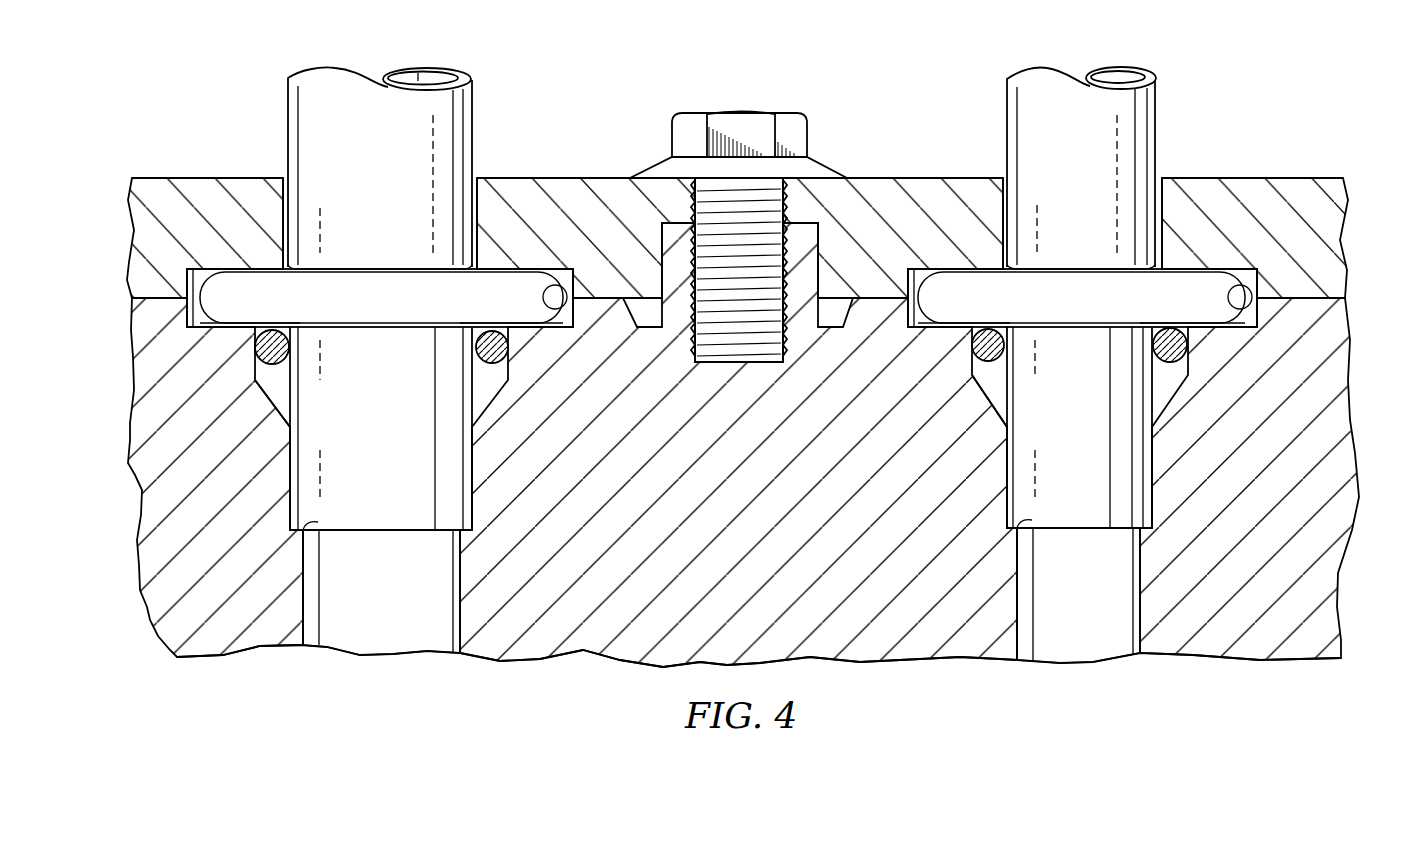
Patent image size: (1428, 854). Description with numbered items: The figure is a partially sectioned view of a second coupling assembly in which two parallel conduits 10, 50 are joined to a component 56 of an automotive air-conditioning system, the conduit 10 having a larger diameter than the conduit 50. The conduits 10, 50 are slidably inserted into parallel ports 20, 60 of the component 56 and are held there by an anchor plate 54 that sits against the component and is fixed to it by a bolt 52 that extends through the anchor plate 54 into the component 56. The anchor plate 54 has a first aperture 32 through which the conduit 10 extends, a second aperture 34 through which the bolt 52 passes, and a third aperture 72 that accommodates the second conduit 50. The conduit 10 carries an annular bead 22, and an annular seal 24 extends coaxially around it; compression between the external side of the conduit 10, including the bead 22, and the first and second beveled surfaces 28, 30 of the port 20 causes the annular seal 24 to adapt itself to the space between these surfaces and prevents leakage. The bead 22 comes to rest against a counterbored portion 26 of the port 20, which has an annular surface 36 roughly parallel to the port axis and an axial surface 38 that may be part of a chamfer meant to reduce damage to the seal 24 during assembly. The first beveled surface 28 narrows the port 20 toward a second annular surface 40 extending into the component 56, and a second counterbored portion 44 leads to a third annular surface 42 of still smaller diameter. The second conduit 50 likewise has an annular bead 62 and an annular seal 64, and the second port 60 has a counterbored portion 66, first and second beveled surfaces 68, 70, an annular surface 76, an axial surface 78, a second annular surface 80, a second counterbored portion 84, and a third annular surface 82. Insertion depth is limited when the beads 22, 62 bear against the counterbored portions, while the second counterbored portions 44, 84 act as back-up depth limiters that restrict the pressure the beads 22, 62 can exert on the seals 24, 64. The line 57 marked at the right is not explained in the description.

The conduit 10 is at (288, 110).
The port 20 is at (400, 638).
The annular bead 22 is at (380, 283).
The annular seal 24 is at (262, 327).
The counterbored portion 26 is at (180, 336).
The first beveled surface 28 is at (282, 403).
The second beveled surface 30 is at (262, 372).
The first aperture 32 is at (483, 200).
The second aperture 34 is at (805, 190).
The annular surface 36 is at (580, 268).
The axial surface 38 is at (585, 326).
The second annular surface 40 is at (470, 470).
The third annular surface 42 is at (455, 578).
The second counterbored portion 44 is at (312, 524).
The conduit 50 is at (1007, 110).
The bolt 52 is at (772, 112).
The anchor plate 54 is at (1348, 212).
The component 56 is at (1352, 528).
The block interface 57 is at (1345, 285).
The port 60 is at (1102, 641).
The annular bead 62 is at (1080, 283).
The annular seal 64 is at (978, 327).
The counterbored portion 66 is at (898, 337).
The first beveled surface 68 is at (1000, 403).
The second beveled surface 70 is at (980, 372).
The third aperture 72 is at (1168, 200).
The annular surface 76 is at (1240, 268).
The axial surface 78 is at (1262, 326).
The second annular surface 80 is at (1150, 500).
The third annular surface 82 is at (1135, 578).
The second counterbored portion 84 is at (1030, 524).